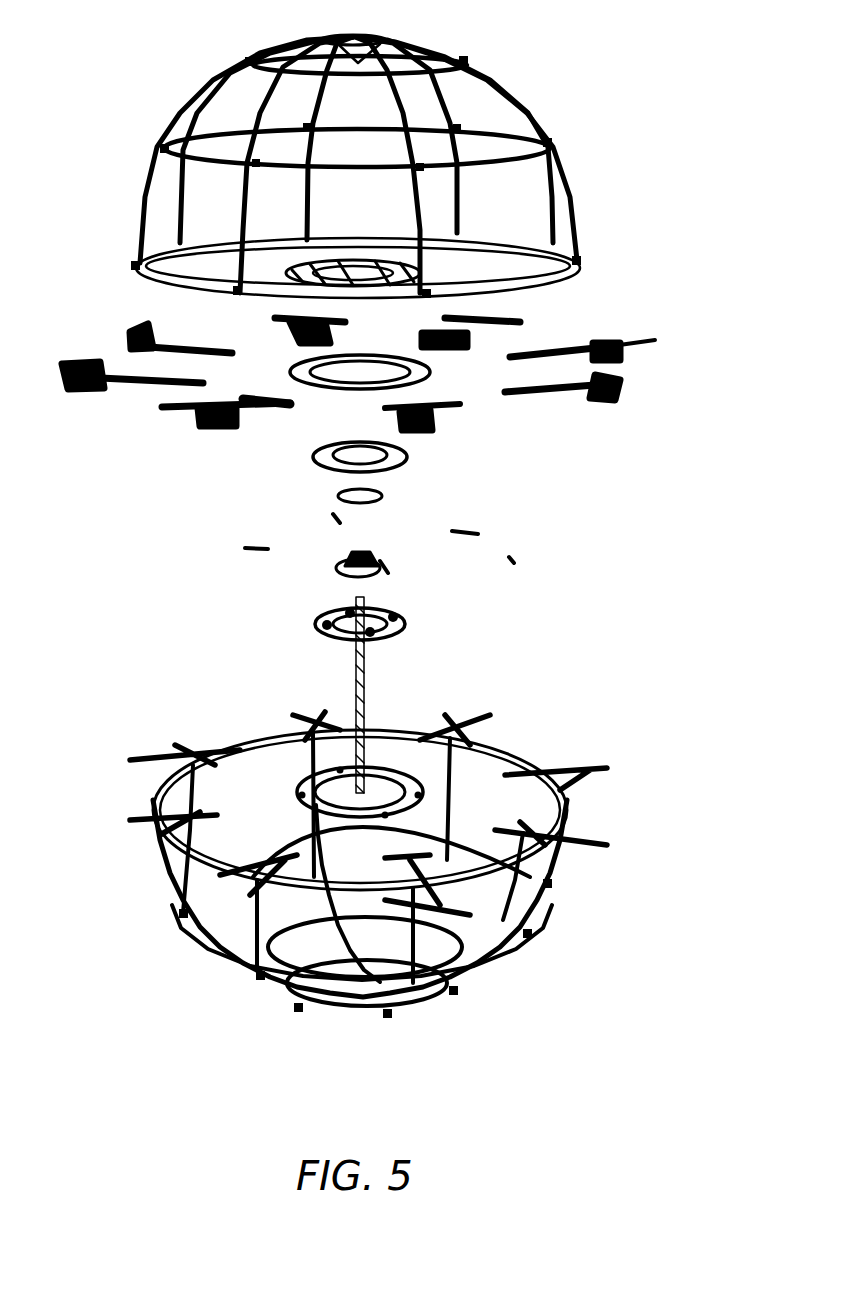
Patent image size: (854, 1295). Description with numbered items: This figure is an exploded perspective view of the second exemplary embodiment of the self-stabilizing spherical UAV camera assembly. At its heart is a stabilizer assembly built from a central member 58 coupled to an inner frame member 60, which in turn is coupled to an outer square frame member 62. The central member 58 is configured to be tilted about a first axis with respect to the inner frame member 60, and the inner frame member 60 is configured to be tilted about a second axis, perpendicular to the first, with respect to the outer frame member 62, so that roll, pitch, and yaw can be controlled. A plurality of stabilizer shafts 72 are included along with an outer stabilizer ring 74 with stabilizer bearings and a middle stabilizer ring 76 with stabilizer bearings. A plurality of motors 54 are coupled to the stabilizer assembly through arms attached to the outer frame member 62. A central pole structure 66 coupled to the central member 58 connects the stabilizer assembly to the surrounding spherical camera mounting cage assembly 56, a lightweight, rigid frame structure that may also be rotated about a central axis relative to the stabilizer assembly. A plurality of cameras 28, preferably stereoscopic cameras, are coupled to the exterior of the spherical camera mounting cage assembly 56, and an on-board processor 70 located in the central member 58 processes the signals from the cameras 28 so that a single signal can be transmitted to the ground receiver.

The cameras 28 is at (158, 143).
The motors 54 is at (618, 346).
The spherical camera mounting cage assembly 56 is at (507, 80).
The central member 58 is at (383, 495).
The inner frame member 60 is at (407, 458).
The outer square frame member 62 is at (432, 373).
The central pole structure 66 is at (367, 660).
The on-board processor 70 is at (390, 257).
The stabilizer shafts 72 is at (245, 547).
The outer stabilizer ring 74 is at (377, 577).
The middle stabilizer ring 76 is at (410, 620).